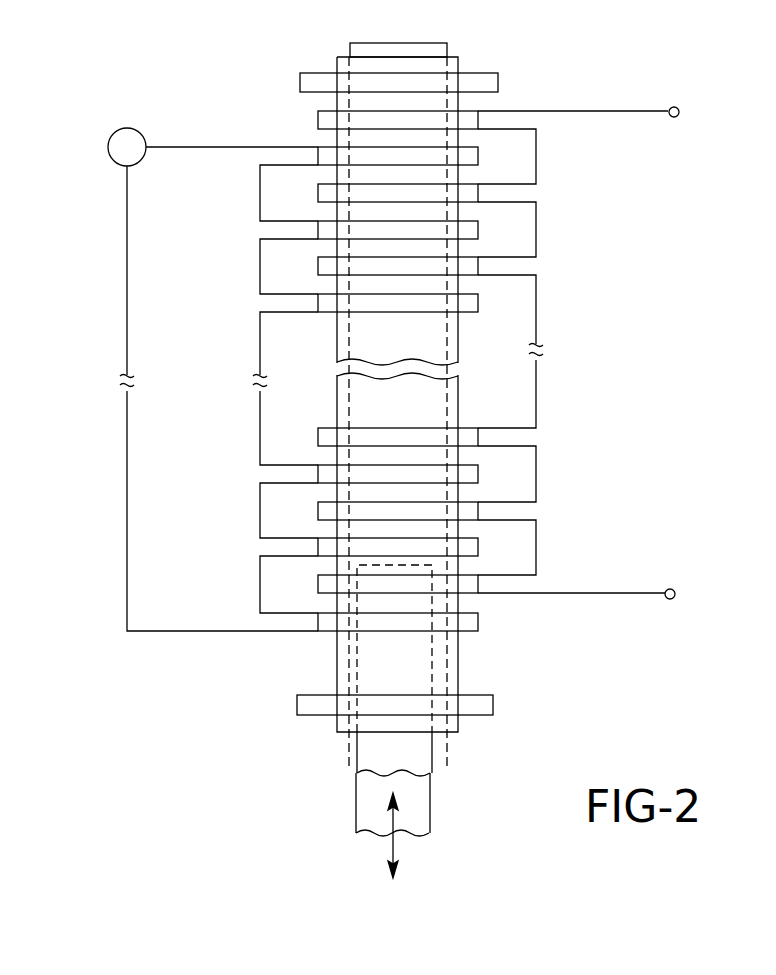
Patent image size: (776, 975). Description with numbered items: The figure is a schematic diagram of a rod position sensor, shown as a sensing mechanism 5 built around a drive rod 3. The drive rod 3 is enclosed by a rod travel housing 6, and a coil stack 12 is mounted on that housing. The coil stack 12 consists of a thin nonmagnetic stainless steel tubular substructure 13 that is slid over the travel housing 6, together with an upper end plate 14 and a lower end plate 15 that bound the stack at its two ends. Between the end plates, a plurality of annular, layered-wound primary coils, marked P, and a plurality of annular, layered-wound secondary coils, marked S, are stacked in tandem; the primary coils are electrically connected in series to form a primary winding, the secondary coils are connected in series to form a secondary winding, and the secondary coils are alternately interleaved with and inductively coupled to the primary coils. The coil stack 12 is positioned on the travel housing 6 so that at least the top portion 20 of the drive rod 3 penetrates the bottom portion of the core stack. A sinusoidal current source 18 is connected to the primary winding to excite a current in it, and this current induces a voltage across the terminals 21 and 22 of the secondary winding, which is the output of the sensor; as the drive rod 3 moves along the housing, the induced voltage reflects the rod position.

The drive rod 3 is at (430, 808).
The sensing mechanism 5 is at (616, 254).
The travel housing 6 is at (448, 43).
The coil stack 12 is at (318, 116).
The tubular substructure 13 is at (337, 59).
The end plate 14 is at (498, 76).
The end plate 15 is at (493, 706).
The sinusoidal current source 18 is at (109, 143).
The top portion of drive rod 20 is at (415, 565).
The terminal 21 is at (678, 108).
The terminal 22 is at (674, 590).